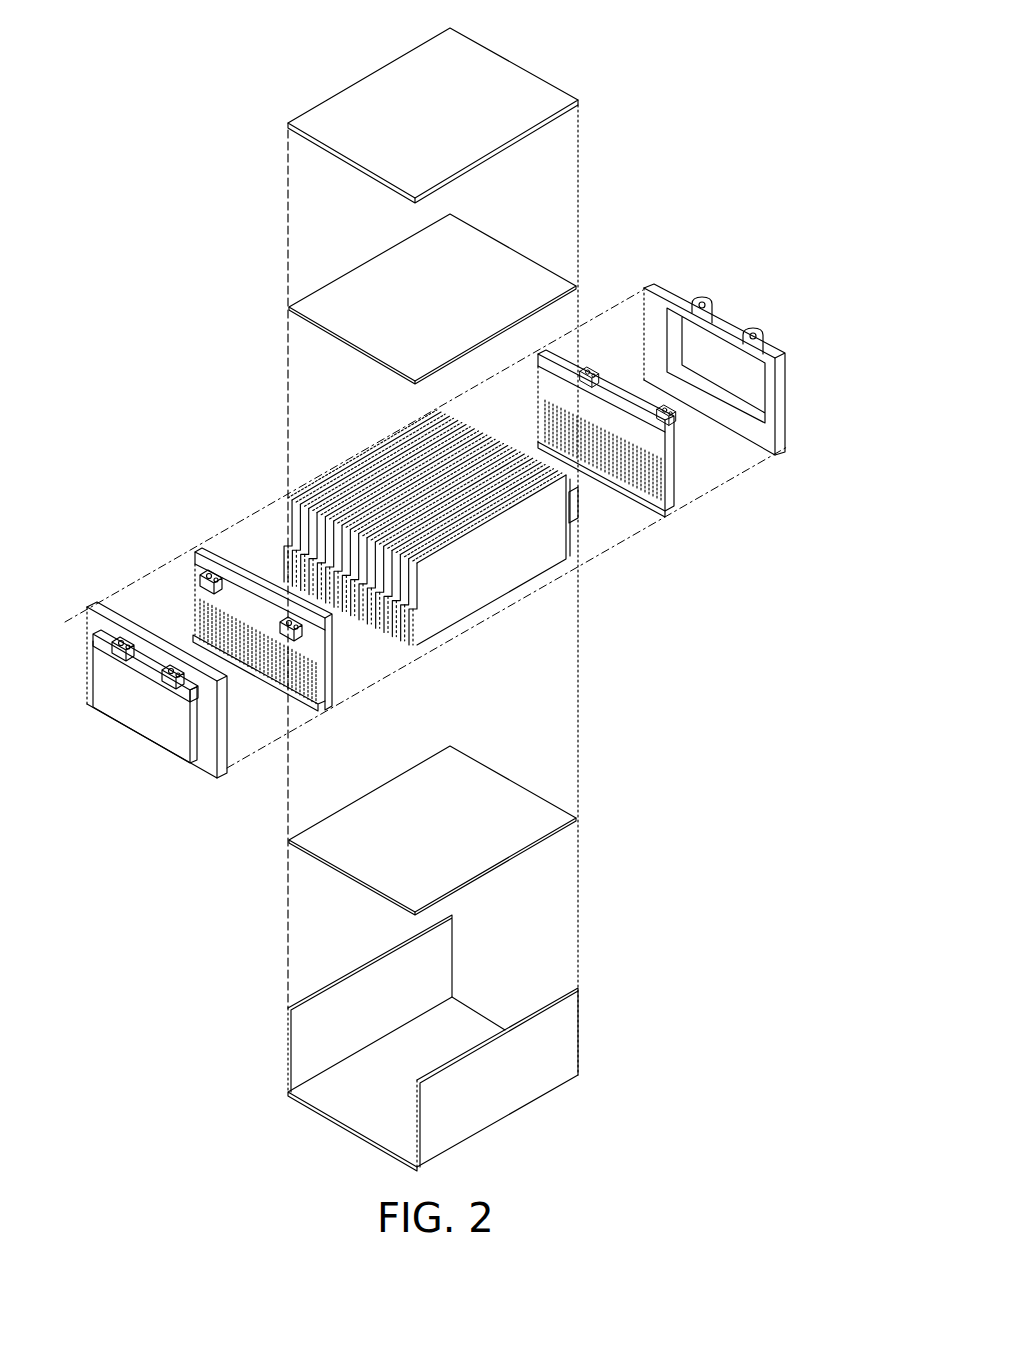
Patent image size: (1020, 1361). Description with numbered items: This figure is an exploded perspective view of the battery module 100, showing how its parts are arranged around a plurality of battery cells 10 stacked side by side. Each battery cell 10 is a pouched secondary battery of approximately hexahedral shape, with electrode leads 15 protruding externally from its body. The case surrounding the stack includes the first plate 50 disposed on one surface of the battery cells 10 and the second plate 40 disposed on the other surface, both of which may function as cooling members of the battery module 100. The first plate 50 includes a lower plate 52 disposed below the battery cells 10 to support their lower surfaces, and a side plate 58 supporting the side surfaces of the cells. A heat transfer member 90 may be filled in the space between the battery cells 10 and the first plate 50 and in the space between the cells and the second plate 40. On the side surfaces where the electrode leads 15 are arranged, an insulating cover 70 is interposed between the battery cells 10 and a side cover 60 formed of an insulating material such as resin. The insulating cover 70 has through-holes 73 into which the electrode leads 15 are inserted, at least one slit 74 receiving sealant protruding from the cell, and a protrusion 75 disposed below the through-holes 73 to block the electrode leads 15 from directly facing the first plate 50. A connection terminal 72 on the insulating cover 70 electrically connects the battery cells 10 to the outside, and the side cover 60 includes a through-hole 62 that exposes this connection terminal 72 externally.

The battery module 100 is at (183, 385).
The battery cell 10 is at (515, 589).
The electrode leads 15 is at (577, 514).
The second plate 40 is at (500, 63).
The first plate 50 is at (381, 1043).
The lower plate 52 is at (313, 1105).
The side plate 58 is at (223, 1130).
The side cover 60 is at (436, 513).
The through-hole 62 is at (183, 690).
The insulating cover 70 is at (449, 582).
The connection terminal 72 is at (197, 563).
The through-holes 73 is at (266, 660).
The slit 74 is at (640, 488).
The protrusion 75 is at (298, 707).
The heat transfer member 90 is at (502, 250).